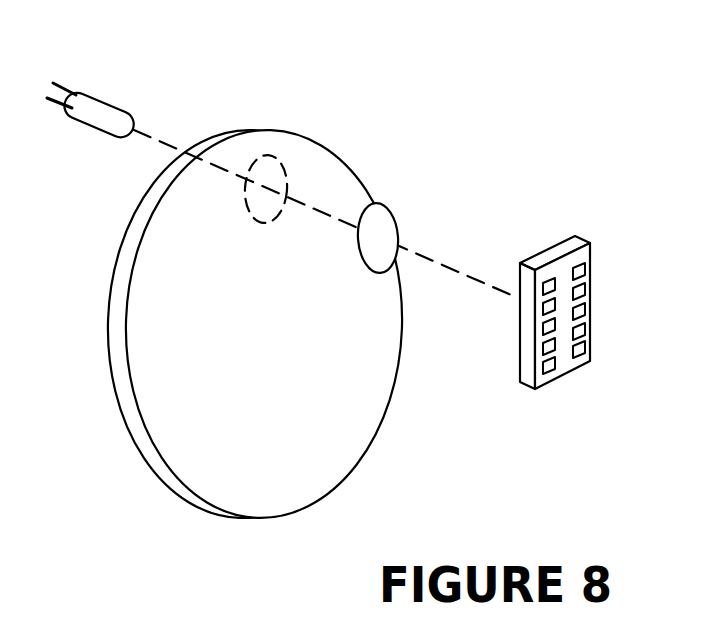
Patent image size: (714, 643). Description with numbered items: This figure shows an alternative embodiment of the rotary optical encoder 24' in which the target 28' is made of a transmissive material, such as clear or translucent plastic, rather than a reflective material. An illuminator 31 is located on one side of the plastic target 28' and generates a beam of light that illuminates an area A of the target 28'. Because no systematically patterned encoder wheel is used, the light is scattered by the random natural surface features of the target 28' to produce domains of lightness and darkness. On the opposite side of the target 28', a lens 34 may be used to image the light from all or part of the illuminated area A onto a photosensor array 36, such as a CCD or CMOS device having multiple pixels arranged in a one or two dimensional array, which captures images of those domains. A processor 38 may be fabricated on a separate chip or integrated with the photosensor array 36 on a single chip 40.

The rotary optical encoder 24' is at (337, 264).
The target 28' is at (289, 323).
The illuminator 31 is at (117, 103).
The lens 34 is at (398, 238).
The photosensor array 36 is at (572, 278).
The processor 38 is at (572, 278).
The single chip 40 is at (553, 254).
The illuminated area A is at (245, 190).